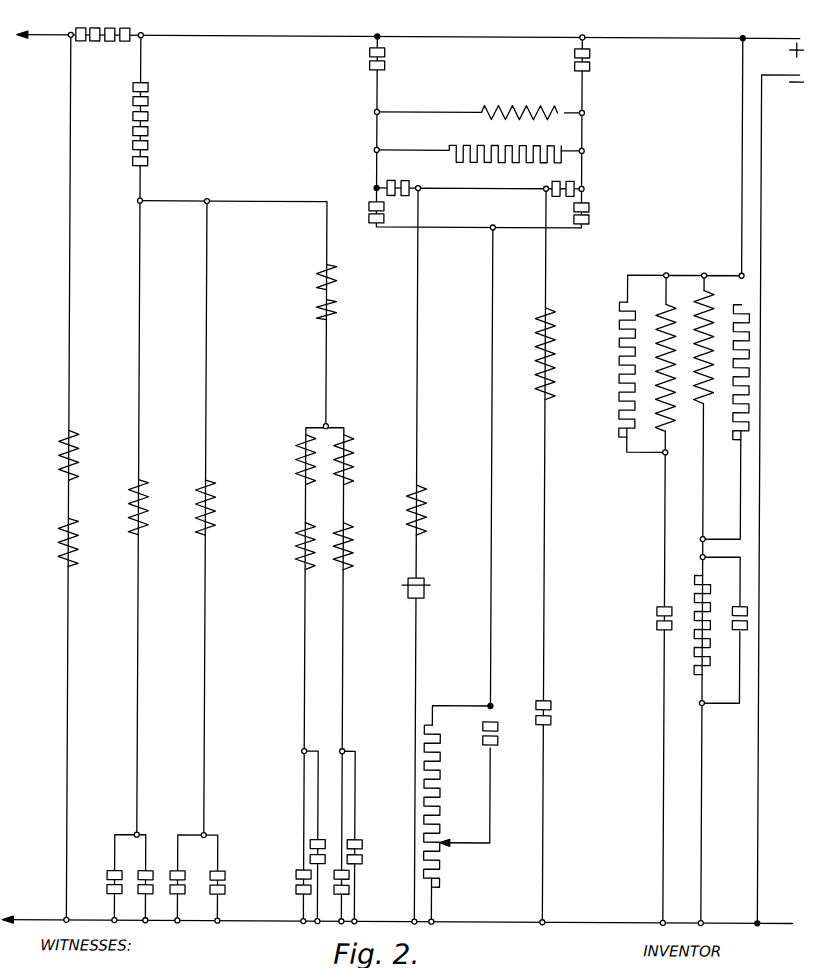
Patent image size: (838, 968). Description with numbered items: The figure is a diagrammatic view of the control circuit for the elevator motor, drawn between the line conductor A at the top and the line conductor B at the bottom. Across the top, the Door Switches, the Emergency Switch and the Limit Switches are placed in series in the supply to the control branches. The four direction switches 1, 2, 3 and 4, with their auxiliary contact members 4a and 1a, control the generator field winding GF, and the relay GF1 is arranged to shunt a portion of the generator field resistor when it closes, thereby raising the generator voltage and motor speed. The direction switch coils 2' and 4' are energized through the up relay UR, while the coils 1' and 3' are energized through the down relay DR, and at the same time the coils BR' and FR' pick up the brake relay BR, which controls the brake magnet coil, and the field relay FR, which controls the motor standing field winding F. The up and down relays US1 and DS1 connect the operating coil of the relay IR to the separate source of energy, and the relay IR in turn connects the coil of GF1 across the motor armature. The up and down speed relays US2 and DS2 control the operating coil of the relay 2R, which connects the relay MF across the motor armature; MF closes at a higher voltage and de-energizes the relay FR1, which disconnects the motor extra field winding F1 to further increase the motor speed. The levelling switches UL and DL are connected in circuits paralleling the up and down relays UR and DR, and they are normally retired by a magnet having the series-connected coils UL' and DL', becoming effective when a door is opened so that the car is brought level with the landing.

The line conductor A is at (59, 40).
The line conductor / brake magnet coil B is at (41, 916).
The door switches Door Switches is at (112, 26).
The emergency switch Emergency Switch is at (150, 94).
The limit switches Limit Switches is at (152, 147).
The direction switch 4 is at (362, 60).
The direction switch 1 is at (594, 61).
The direction switch 3 is at (364, 215).
The direction switch 2 is at (593, 216).
The interlock contact members of direction switch 4 4a is at (385, 180).
The interlock contact members of direction switch 1 1a is at (576, 185).
The generator field winding GF is at (492, 103).
The operating coil of brake relay BR BR' is at (348, 277).
The operating coil of field relay FR FR' is at (346, 311).
The direction switch coil 2' is at (292, 459).
The direction switch coil 1' is at (356, 460).
The direction switch coil 4' is at (291, 545).
The direction switch coil 3' is at (355, 546).
The field relay FR1 is at (429, 504).
The relay MF is at (428, 590).
The levelling magnet coil UL' is at (86, 455).
The levelling magnet coil DL' is at (86, 542).
The relay 2R is at (148, 527).
The relay IR is at (212, 520).
The motor extra field winding F1 is at (675, 398).
The motor standing field winding F is at (712, 390).
The field relay FR is at (758, 623).
The generator field relay GF1 is at (484, 735).
The brake relay BR is at (559, 715).
The up levelling switch UL is at (298, 851).
The down levelling switch DL is at (371, 854).
The up relay UR is at (299, 886).
The down relay DR is at (352, 890).
The up speed relay US2 is at (112, 875).
The down speed relay DS2 is at (160, 880).
The up speed relay US1 is at (190, 878).
The down speed relay DS1 is at (231, 878).